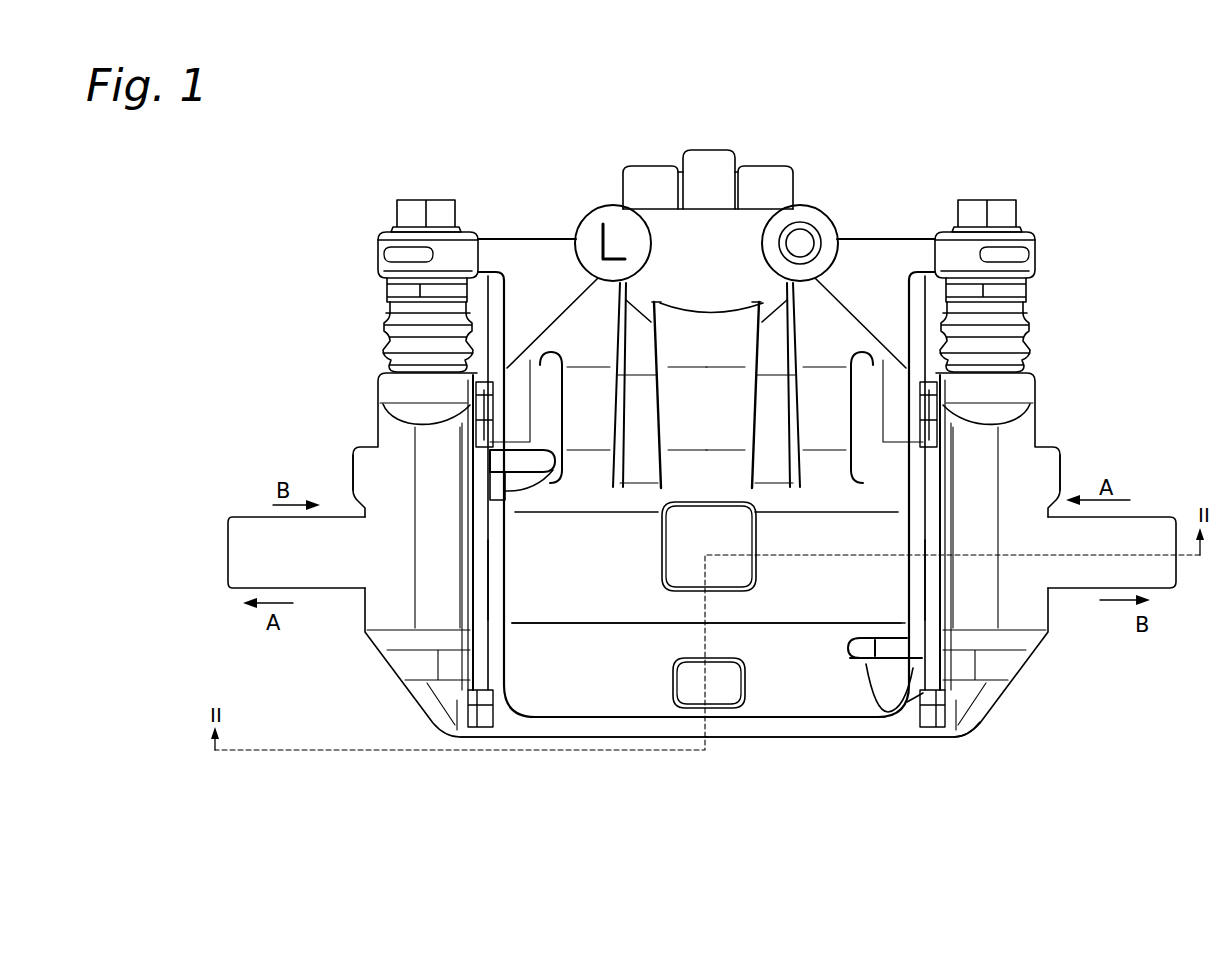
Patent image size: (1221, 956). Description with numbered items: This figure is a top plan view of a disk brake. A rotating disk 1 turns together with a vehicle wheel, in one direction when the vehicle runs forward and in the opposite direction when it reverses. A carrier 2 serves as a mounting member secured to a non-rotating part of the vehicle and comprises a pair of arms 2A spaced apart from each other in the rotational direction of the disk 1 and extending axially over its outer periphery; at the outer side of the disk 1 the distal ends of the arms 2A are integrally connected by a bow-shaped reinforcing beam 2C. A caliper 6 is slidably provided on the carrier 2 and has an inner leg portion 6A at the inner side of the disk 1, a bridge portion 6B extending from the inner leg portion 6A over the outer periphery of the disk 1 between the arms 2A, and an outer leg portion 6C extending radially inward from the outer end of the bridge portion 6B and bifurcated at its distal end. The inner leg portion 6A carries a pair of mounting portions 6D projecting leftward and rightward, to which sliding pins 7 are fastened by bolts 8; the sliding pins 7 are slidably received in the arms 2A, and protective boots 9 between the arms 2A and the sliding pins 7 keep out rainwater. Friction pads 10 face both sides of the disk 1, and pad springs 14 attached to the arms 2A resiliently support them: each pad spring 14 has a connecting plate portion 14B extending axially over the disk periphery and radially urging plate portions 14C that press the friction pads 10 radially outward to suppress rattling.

The disk 1 is at (1147, 515).
The carrier 2 is at (1000, 726).
The arms 2A is at (397, 475).
The reinforcing beam 2C is at (653, 730).
The caliper 6 is at (606, 203).
The inner leg portion 6A is at (702, 323).
The bridge portion 6B is at (623, 610).
The outer leg portion 6C is at (753, 720).
The mounting portions 6D is at (392, 252).
The sliding pins 7 is at (400, 292).
The bolts 8 is at (417, 200).
The protective boots 9 is at (400, 328).
The friction pads 10 is at (527, 440).
The pad springs 14 is at (462, 603).
The connecting plate portion 14B is at (480, 542).
The radially urging plate portions 14C is at (488, 380).